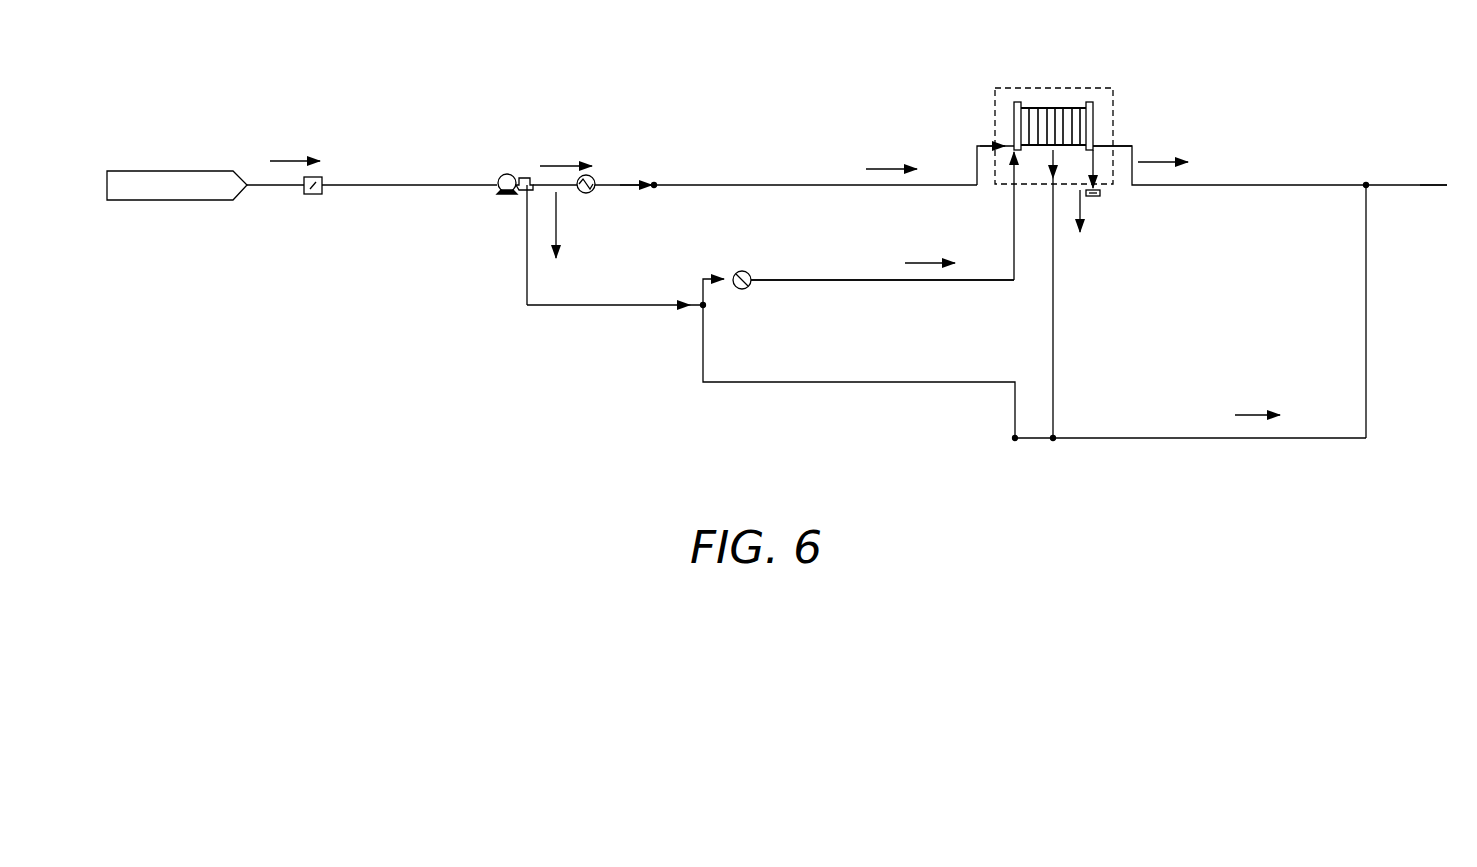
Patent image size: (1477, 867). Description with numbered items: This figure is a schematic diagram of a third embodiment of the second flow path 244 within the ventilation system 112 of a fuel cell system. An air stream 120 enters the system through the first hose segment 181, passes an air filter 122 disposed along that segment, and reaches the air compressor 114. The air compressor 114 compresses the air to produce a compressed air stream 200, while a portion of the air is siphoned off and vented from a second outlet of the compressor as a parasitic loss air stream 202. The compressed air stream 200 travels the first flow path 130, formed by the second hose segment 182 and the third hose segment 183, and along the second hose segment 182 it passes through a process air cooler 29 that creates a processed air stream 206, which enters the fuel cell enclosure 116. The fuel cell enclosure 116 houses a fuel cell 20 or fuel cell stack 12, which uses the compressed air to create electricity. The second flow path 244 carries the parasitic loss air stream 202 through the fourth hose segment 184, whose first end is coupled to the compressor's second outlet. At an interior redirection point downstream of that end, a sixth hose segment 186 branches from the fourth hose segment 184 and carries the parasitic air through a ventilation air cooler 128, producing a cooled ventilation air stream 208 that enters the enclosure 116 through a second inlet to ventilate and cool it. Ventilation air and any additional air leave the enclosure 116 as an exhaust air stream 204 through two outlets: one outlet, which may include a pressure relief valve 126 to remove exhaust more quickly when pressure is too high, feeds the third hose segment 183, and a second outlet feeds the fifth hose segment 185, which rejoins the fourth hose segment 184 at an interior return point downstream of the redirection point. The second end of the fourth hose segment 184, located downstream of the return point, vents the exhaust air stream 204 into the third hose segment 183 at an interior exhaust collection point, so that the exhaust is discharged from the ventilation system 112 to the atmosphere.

The ventilation system 112 is at (218, 122).
The air stream 120 is at (370, 175).
The air filter 122 is at (313, 197).
The first hose segment 181 is at (398, 187).
The air compressor 114 is at (522, 172).
The compressed air stream 200 is at (590, 156).
The process air cooler 29 is at (590, 194).
The parasitic loss air stream 202 is at (580, 293).
The second hose segment 182 is at (725, 185).
The first flow path 130 is at (851, 185).
The processed air stream 206 is at (965, 184).
The second flow path 244 is at (527, 262).
The fourth hose segment 184 is at (548, 305).
The ventilation air cooler 128 is at (705, 278).
The sixth hose segment 186 is at (890, 275).
The cooled ventilation air stream 208 is at (1004, 276).
The fuel cell enclosure 116 is at (1113, 88).
The fuel cell stack 12 is at (1006, 87).
The fuel cell 20 is at (1005, 118).
The fifth hose segment 185 is at (1055, 387).
The exhaust air stream 204 is at (1105, 266).
The pressure relief valve 126 is at (1097, 198).
The third hose segment 183 is at (1447, 184).